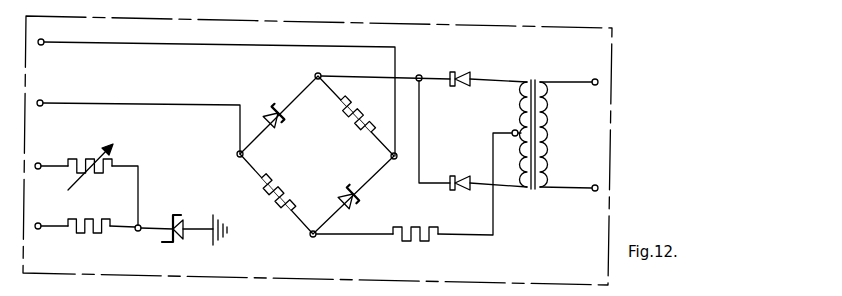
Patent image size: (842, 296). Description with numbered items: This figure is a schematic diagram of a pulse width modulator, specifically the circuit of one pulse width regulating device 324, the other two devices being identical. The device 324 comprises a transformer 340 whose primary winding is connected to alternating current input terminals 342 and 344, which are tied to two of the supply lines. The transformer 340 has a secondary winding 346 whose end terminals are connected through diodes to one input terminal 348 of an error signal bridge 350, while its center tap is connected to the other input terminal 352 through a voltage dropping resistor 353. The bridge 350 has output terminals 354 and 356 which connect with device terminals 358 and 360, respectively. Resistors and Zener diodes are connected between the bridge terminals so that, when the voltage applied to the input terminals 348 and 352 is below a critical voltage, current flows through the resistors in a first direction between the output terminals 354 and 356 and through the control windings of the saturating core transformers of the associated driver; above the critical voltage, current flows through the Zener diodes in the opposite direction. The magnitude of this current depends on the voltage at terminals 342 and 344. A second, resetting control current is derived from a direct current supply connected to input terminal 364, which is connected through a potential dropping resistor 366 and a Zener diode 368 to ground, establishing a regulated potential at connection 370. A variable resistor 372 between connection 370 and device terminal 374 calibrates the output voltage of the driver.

The pulse width regulating device 324 is at (567, 28).
The transformer 340 is at (531, 76).
The alternating current input terminal 342 is at (594, 79).
The alternating current input terminal 344 is at (594, 191).
The secondary winding 346 is at (519, 100).
The input terminal of error signal bridge 348 is at (315, 75).
The error signal bridge 350 is at (332, 151).
The input terminal of error signal bridge 352 is at (313, 237).
The voltage dropping resistor 353 is at (419, 243).
The output terminal of bridge 354 is at (237, 154).
The output terminal of bridge 356 is at (395, 160).
The device terminal 358 is at (43, 101).
The device terminal 360 is at (44, 40).
The input terminal 364 is at (40, 223).
The potential dropping resistor 366 is at (87, 220).
The Zener diode 368 is at (173, 214).
The connection 370 is at (138, 231).
The variable resistor 372 is at (84, 158).
The device terminal 374 is at (42, 169).